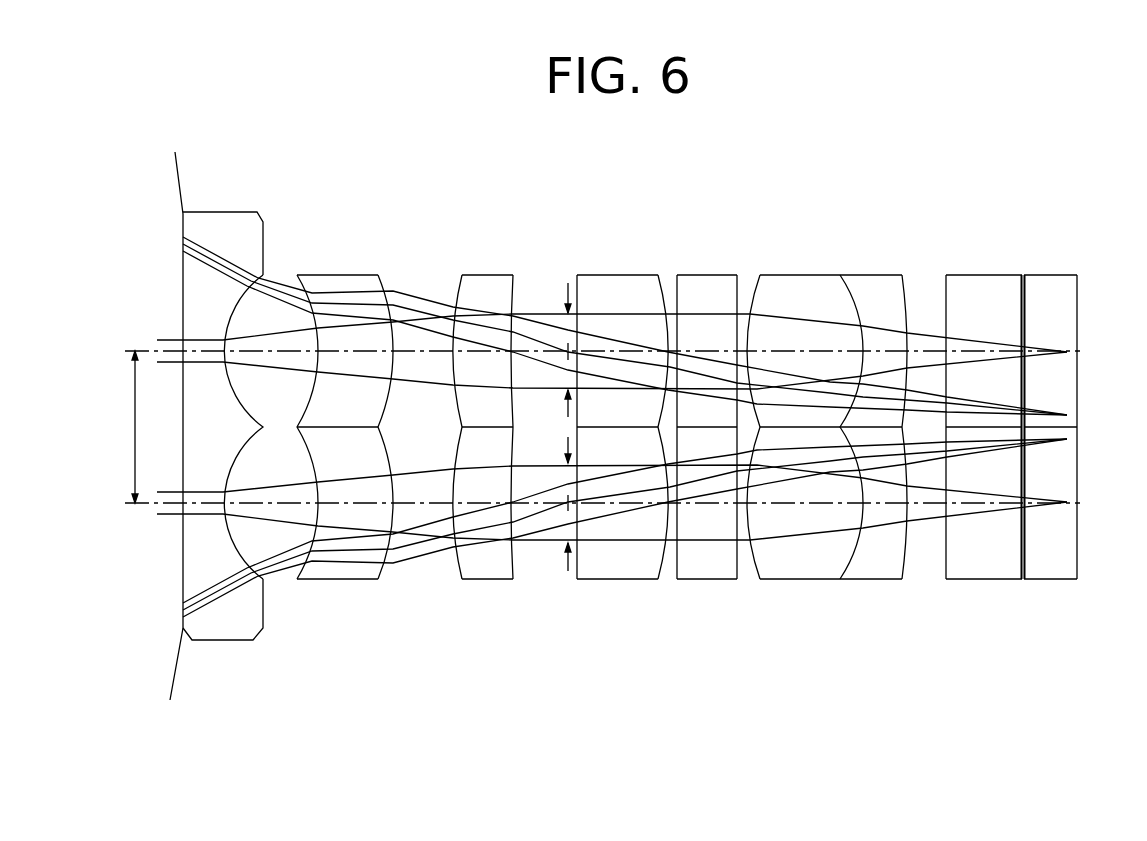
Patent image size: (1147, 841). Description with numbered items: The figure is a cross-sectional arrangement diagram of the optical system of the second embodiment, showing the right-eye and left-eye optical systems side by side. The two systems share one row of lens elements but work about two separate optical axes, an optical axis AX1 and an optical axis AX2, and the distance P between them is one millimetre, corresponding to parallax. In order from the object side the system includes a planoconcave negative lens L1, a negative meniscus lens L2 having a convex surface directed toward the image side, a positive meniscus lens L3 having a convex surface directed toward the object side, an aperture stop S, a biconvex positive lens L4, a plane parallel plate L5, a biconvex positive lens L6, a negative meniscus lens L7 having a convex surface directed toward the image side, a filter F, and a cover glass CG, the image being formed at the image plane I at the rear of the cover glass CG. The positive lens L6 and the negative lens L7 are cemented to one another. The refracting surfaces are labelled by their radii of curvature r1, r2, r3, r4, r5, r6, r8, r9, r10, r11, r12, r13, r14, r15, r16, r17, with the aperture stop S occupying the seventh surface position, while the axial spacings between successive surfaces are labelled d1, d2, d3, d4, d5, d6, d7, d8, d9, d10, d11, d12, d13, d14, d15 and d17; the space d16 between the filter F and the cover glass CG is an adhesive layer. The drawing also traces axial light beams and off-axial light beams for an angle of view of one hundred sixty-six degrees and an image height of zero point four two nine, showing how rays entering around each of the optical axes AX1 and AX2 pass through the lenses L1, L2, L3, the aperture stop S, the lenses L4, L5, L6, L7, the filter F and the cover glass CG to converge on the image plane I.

The optical axis AX1 is at (143, 348).
The optical axis AX2 is at (143, 507).
The distance between optical axes P is at (130, 427).
The planoconcave negative lens L1 is at (209, 434).
The negative meniscus lens L2 is at (343, 458).
The positive meniscus lens L3 is at (480, 458).
The biconvex positive lens L4 is at (621, 458).
The plane parallel plate L5 is at (707, 458).
The biconvex positive lens L6 is at (805, 458).
The negative meniscus lens L7 is at (878, 458).
The aperture stop S is at (566, 284).
The filter F is at (976, 458).
The cover glass CG is at (1060, 458).
The image plane I is at (1080, 305).
The lens surface radius of curvature r1 is at (183, 263).
The lens surface radius of curvature r2 is at (245, 300).
The lens surface radius of curvature r3 is at (294, 275).
The lens surface radius of curvature r4 is at (383, 278).
The lens surface radius of curvature r5 is at (460, 283).
The lens surface radius of curvature r6 is at (514, 285).
The lens surface radius of curvature r8 is at (577, 280).
The lens surface radius of curvature r9 is at (660, 282).
The lens surface radius of curvature r10 is at (677, 283).
The lens surface radius of curvature r11 is at (738, 282).
The lens surface radius of curvature r12 is at (758, 282).
The lens surface radius of curvature r13 is at (845, 285).
The lens surface radius of curvature r14 is at (903, 285).
The lens surface radius of curvature r15 is at (946, 285).
The lens surface radius of curvature r16 is at (1020, 292).
The lens surface radius of curvature r17 is at (1030, 292).
The distance between lens surfaces d1 is at (242, 583).
The distance between lens surfaces d2 is at (270, 505).
The distance between lens surfaces d3 is at (348, 505).
The distance between lens surfaces d4 is at (420, 505).
The distance between lens surfaces d5 is at (481, 505).
The distance between lens surfaces d6 is at (538, 505).
The distance between lens surfaces d7 is at (571, 505).
The distance between lens surfaces d8 is at (624, 505).
The distance between lens surfaces d9 is at (671, 505).
The distance between lens surfaces d10 is at (708, 505).
The distance between lens surfaces d11 is at (742, 505).
The distance between lens surfaces d12 is at (817, 505).
The distance between lens surfaces d13 is at (883, 505).
The distance between lens surfaces d14 is at (923, 505).
The distance between lens surfaces d15 is at (965, 505).
The adhesive layer space d16 is at (1028, 515).
The distance between lens surfaces d17 is at (1055, 505).